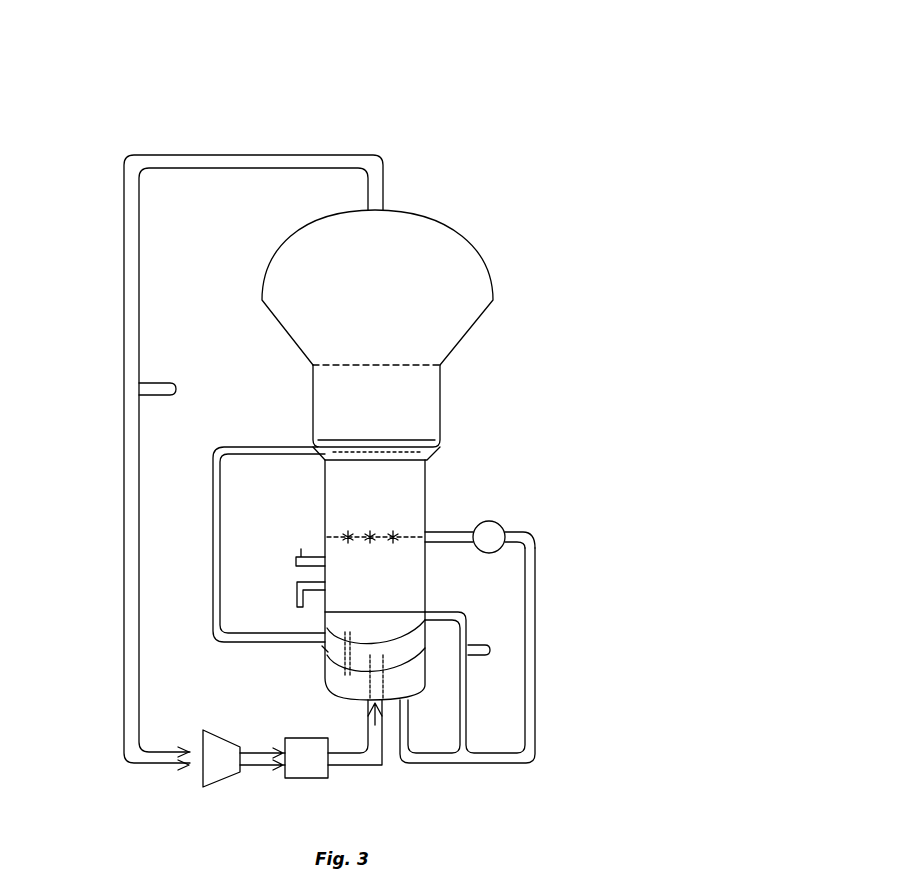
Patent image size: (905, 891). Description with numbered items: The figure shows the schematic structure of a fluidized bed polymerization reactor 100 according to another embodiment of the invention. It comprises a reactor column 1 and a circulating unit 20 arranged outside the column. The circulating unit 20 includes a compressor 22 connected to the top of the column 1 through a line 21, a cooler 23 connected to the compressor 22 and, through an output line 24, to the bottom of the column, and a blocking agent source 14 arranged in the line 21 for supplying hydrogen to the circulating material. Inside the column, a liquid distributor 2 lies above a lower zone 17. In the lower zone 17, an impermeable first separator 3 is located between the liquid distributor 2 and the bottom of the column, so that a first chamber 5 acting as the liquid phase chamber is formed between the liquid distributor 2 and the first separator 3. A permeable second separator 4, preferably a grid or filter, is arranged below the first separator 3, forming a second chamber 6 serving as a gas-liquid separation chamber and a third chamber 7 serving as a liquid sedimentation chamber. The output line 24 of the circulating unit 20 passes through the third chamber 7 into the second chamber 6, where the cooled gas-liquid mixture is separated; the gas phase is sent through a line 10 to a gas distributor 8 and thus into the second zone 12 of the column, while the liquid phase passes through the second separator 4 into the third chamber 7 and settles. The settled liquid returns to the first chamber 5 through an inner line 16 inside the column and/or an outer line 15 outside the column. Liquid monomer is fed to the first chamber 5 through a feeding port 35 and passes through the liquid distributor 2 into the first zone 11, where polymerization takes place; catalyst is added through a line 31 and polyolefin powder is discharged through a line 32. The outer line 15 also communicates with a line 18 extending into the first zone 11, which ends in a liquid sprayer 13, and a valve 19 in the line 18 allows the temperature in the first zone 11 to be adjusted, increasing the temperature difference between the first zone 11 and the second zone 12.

The fluidized bed polymerization reactor 100 is at (446, 104).
The reactor column 1 is at (457, 235).
The liquid distributor 2 is at (405, 610).
The first separator 3 is at (426, 633).
The second separator 4 is at (424, 655).
The first chamber 5 is at (372, 632).
The second chamber 6 is at (400, 658).
The third chamber 7 is at (400, 682).
The gas distributor 8 is at (437, 437).
The line 10 is at (214, 540).
The first zone 11 is at (408, 517).
The second zone 12 is at (415, 400).
The liquid sprayer 13 is at (345, 537).
The blocking agent source 14 is at (175, 386).
The outer line 15 is at (468, 611).
The inner line 16 is at (342, 680).
The lower zone 17 is at (322, 652).
The line 18 is at (536, 612).
The valve 19 is at (498, 524).
The circulating unit 20 is at (86, 323).
The line 21 is at (208, 160).
The compressor 22 is at (217, 767).
The cooler 23 is at (305, 765).
The output line 24 is at (358, 768).
The line 31 is at (301, 552).
The line 32 is at (297, 588).
The feeding port 35 is at (483, 645).